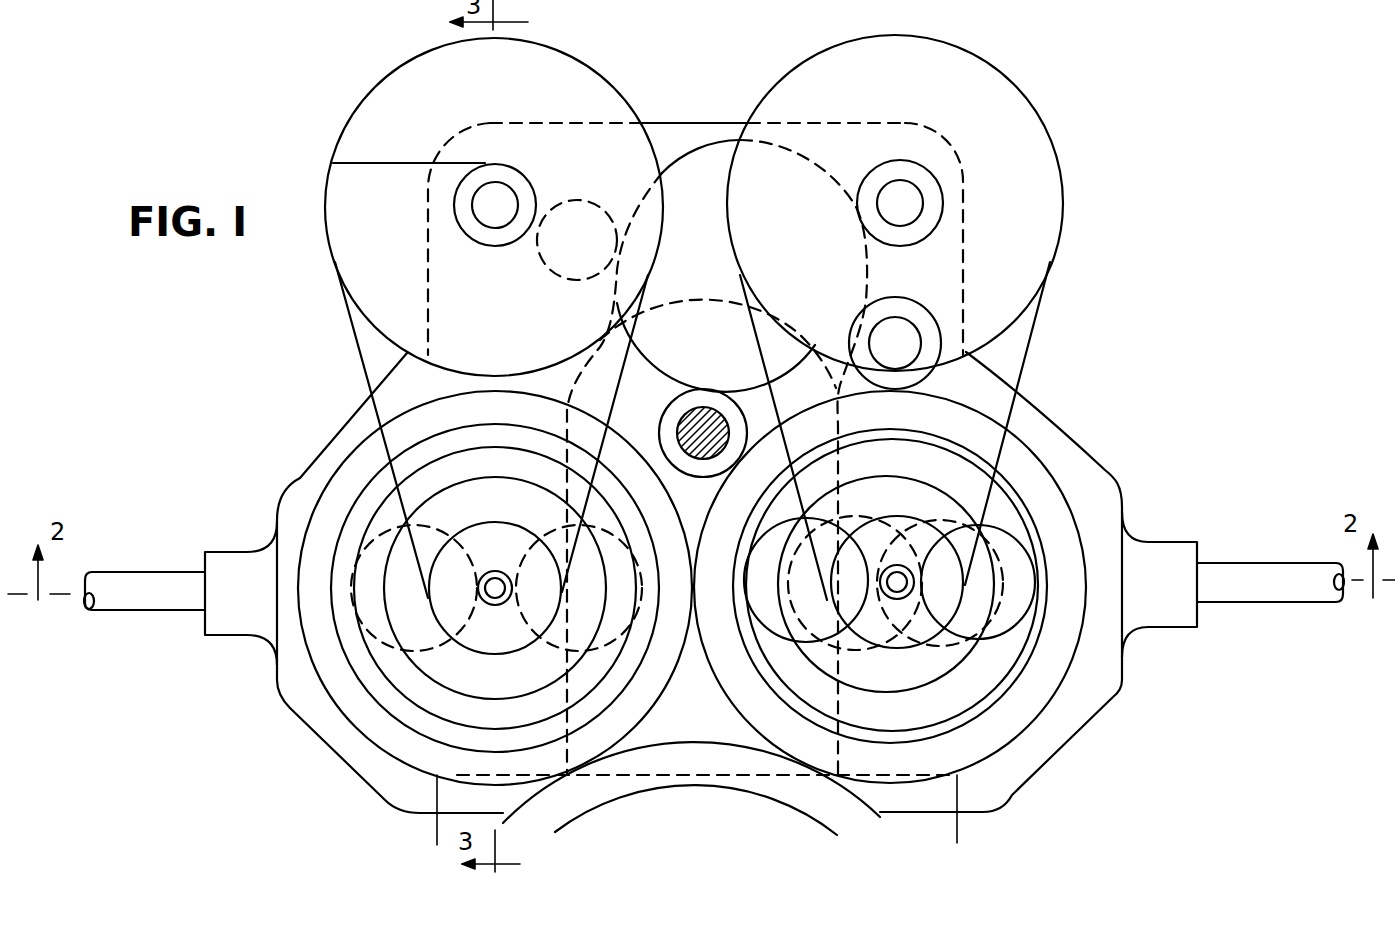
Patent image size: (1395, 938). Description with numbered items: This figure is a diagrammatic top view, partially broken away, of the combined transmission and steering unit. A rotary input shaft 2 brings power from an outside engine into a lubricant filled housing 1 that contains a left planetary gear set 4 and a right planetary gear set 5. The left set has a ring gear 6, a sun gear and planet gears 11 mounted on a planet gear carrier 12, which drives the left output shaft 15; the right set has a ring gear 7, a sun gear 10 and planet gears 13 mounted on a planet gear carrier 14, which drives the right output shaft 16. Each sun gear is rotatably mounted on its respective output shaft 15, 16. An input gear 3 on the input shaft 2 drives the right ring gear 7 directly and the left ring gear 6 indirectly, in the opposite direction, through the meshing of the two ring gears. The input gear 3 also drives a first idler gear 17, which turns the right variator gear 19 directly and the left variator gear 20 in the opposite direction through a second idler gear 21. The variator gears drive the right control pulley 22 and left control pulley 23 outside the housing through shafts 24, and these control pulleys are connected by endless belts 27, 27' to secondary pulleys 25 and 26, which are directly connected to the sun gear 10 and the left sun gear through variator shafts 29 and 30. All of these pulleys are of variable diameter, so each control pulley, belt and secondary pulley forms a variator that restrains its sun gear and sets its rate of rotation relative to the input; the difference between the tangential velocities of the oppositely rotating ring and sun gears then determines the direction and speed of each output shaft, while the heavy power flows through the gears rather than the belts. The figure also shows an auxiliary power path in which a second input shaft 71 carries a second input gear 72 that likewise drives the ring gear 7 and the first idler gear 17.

The housing 1 is at (1083, 458).
The rotary input shaft 2 is at (690, 420).
The input gear 3 is at (658, 445).
The left planetary gear set 4 is at (357, 445).
The right planetary gear set 5 is at (1070, 532).
The ring gear 6 is at (677, 640).
The ring gear 7 is at (736, 694).
The sun gear 10 is at (908, 595).
The planet gears 11 is at (386, 645).
The planet gear carrier 12 is at (527, 675).
The planet gears 13 is at (784, 632).
The planet gear carrier 14 is at (957, 660).
The left output shaft 15 is at (170, 572).
The right output shaft 16 is at (1255, 563).
The first idler gear 17 is at (713, 163).
The right variator gear 19 is at (903, 180).
The left variator gear 20 is at (537, 182).
The second idler gear 21 is at (604, 205).
The right control pulley 22 is at (1050, 137).
The left control pulley 23 is at (612, 85).
The shafts 24 is at (471, 197).
The secondary pulley 25 is at (912, 650).
The secondary pulley 26 is at (492, 655).
The endless belts 27 is at (912, 431).
The belt 27' is at (471, 430).
The variator shaft 29 is at (901, 567).
The variator shaft 30 is at (499, 577).
The second input shaft 71 is at (920, 320).
The second input gear 72 is at (942, 340).